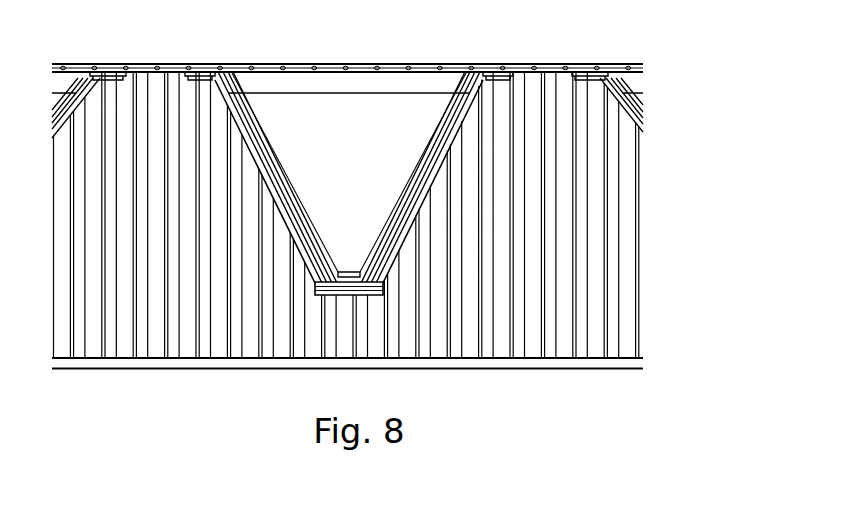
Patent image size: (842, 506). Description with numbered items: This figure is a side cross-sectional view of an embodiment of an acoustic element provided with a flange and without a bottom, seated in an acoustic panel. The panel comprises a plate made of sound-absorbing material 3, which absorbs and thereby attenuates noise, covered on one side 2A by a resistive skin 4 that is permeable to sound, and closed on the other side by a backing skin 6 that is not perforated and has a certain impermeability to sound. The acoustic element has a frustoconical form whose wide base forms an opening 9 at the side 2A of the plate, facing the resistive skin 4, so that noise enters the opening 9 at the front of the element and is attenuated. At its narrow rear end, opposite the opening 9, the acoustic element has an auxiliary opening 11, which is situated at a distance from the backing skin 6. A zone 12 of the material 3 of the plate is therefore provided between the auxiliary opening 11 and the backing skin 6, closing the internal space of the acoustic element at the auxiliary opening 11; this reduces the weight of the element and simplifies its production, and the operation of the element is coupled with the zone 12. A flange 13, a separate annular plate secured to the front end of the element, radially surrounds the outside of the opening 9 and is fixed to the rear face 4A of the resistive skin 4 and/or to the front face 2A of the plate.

The side of the plate 2A is at (190, 96).
The sound-absorbing material 3 is at (307, 315).
The resistive skin 4 is at (155, 64).
The rear face of the resistive skin 4A is at (538, 92).
The backing skin 6 is at (156, 369).
The opening 9 is at (330, 76).
The auxiliary opening 11 is at (355, 295).
The zone of material 12 is at (391, 307).
The flange 13 is at (204, 71).